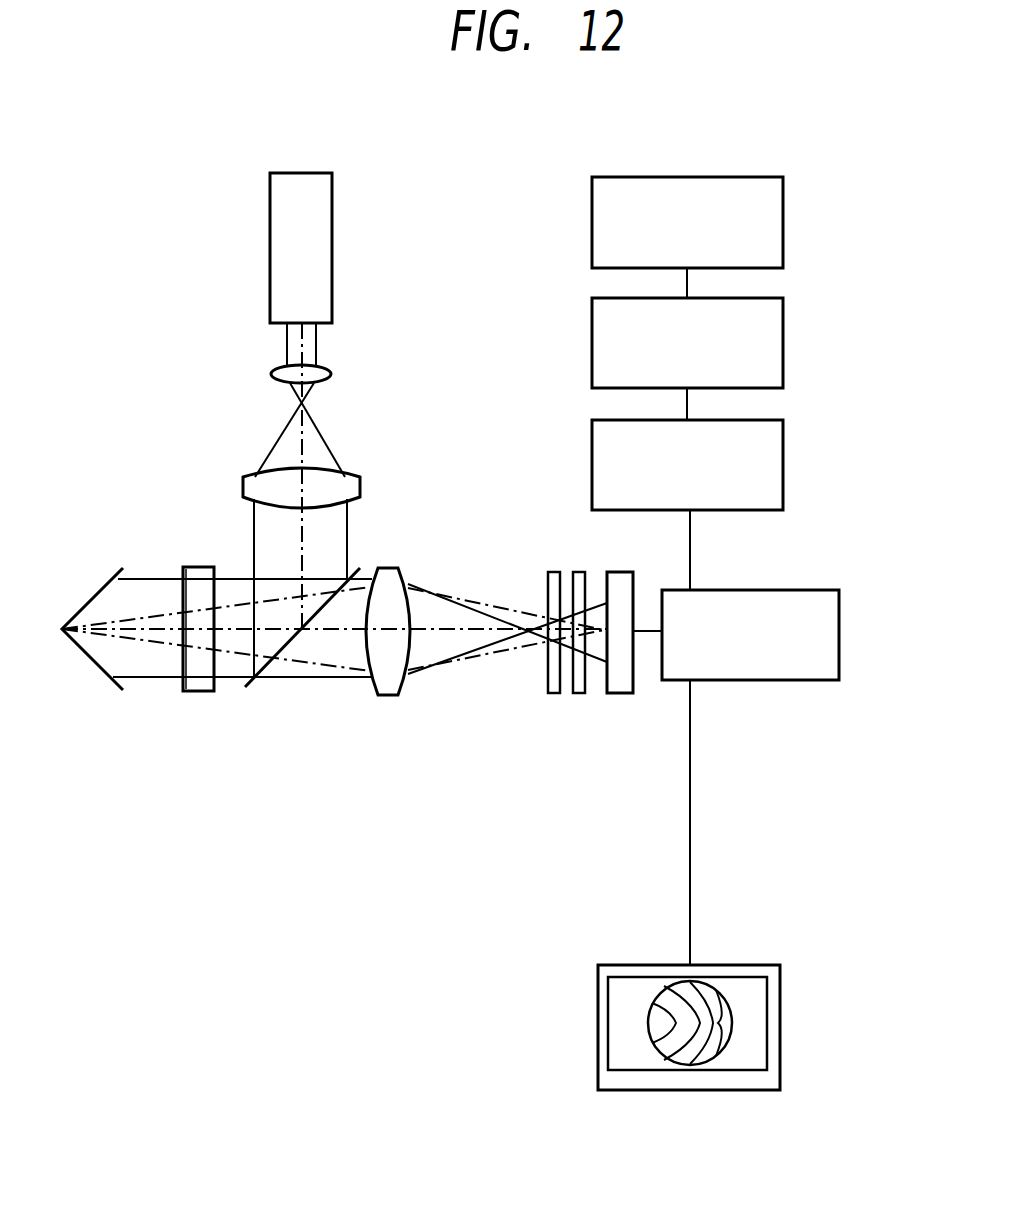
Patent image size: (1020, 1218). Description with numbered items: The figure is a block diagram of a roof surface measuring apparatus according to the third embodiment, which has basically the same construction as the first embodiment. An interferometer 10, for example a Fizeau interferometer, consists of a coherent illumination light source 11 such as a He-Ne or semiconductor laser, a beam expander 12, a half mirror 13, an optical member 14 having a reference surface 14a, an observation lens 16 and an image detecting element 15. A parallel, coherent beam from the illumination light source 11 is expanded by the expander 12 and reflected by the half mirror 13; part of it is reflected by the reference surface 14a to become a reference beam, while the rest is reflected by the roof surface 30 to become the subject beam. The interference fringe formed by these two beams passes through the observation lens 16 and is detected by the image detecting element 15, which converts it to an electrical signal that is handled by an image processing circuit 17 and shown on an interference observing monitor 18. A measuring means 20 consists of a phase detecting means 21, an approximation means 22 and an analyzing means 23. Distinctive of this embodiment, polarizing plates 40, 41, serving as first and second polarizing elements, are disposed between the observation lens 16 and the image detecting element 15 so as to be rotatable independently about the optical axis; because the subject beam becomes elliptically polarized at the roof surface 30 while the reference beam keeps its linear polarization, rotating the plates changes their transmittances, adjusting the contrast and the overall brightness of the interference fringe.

The interferometer 10 is at (645, 747).
The coherent illumination light source 11 is at (332, 302).
The beam expander 12 is at (380, 354).
The half mirror 13 is at (248, 690).
The optical member 14 is at (198, 566).
The reference surface 14a is at (187, 692).
The image detecting element 15 is at (612, 694).
The observation lens 16 is at (388, 567).
The image processing circuit 17 is at (820, 681).
The interference observing monitor 18 is at (780, 1070).
The measuring means 20 is at (847, 198).
The phase detecting means 21 is at (783, 494).
The approximation means 22 is at (783, 370).
The analyzing means 23 is at (783, 251).
The roof surface 30 is at (96, 695).
The first polarizing plate 40 is at (553, 571).
The second polarizing plate 41 is at (580, 571).